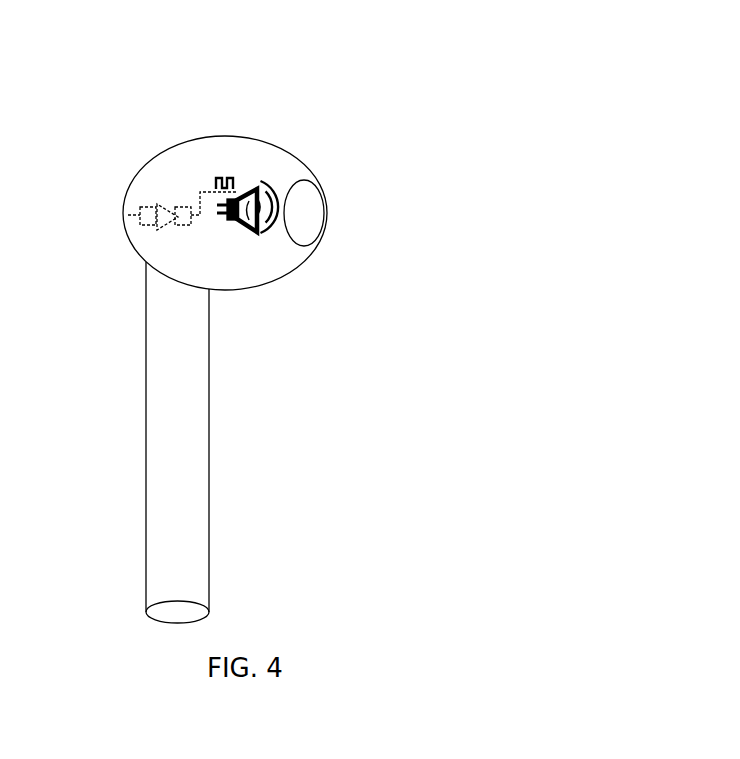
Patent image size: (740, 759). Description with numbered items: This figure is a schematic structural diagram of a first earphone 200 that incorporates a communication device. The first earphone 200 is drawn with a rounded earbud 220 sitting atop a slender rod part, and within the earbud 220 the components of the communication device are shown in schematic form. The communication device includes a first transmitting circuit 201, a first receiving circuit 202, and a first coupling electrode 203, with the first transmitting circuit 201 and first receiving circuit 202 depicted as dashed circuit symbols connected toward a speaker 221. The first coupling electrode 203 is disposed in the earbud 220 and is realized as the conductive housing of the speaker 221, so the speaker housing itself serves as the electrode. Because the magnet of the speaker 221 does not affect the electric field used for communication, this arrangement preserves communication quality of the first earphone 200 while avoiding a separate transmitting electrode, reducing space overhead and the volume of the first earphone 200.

The first earphone 200 is at (229, 40).
The earbud 220 is at (195, 163).
The speaker 221 is at (261, 232).
The first coupling electrode 203 is at (258, 190).
The first receiving circuit 202 is at (178, 203).
The first transmitting circuit 201 is at (155, 232).